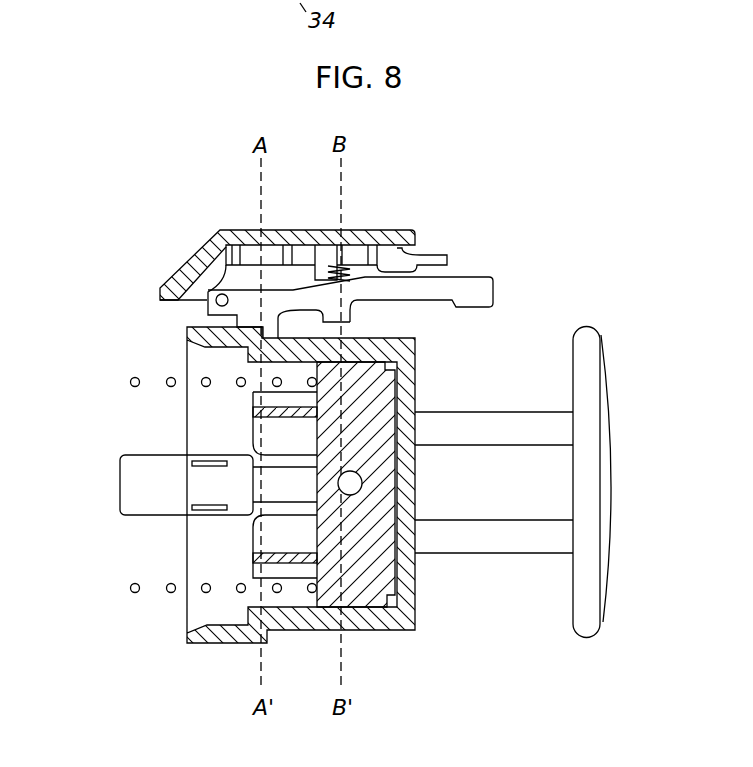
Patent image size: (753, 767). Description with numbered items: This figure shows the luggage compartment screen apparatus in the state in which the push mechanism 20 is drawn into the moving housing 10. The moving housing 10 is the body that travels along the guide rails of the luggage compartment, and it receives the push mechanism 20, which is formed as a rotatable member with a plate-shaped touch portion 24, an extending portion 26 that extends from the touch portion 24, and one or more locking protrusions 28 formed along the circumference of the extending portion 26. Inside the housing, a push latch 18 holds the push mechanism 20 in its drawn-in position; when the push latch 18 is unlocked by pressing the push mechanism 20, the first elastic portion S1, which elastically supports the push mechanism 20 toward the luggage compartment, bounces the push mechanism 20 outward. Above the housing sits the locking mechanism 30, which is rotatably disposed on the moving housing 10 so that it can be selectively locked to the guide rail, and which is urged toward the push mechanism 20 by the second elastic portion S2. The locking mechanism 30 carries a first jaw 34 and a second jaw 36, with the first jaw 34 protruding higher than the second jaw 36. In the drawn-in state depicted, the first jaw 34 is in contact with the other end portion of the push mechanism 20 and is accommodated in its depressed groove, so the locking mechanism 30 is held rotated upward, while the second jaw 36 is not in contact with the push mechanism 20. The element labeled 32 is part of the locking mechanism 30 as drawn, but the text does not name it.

The moving housing 10 is at (449, 214).
The push latch 18 is at (137, 487).
The push mechanism 20 is at (611, 334).
The touch portion 24 is at (586, 335).
The extending portion 26 is at (462, 495).
The locking protrusion 28 is at (527, 542).
The locking mechanism 30 is at (485, 272).
The hook arm 32 is at (176, 276).
The first jaw 34 is at (257, 322).
The second jaw 36 is at (352, 320).
The first elastic portion S1 is at (133, 380).
The second elastic portion S2 is at (342, 278).